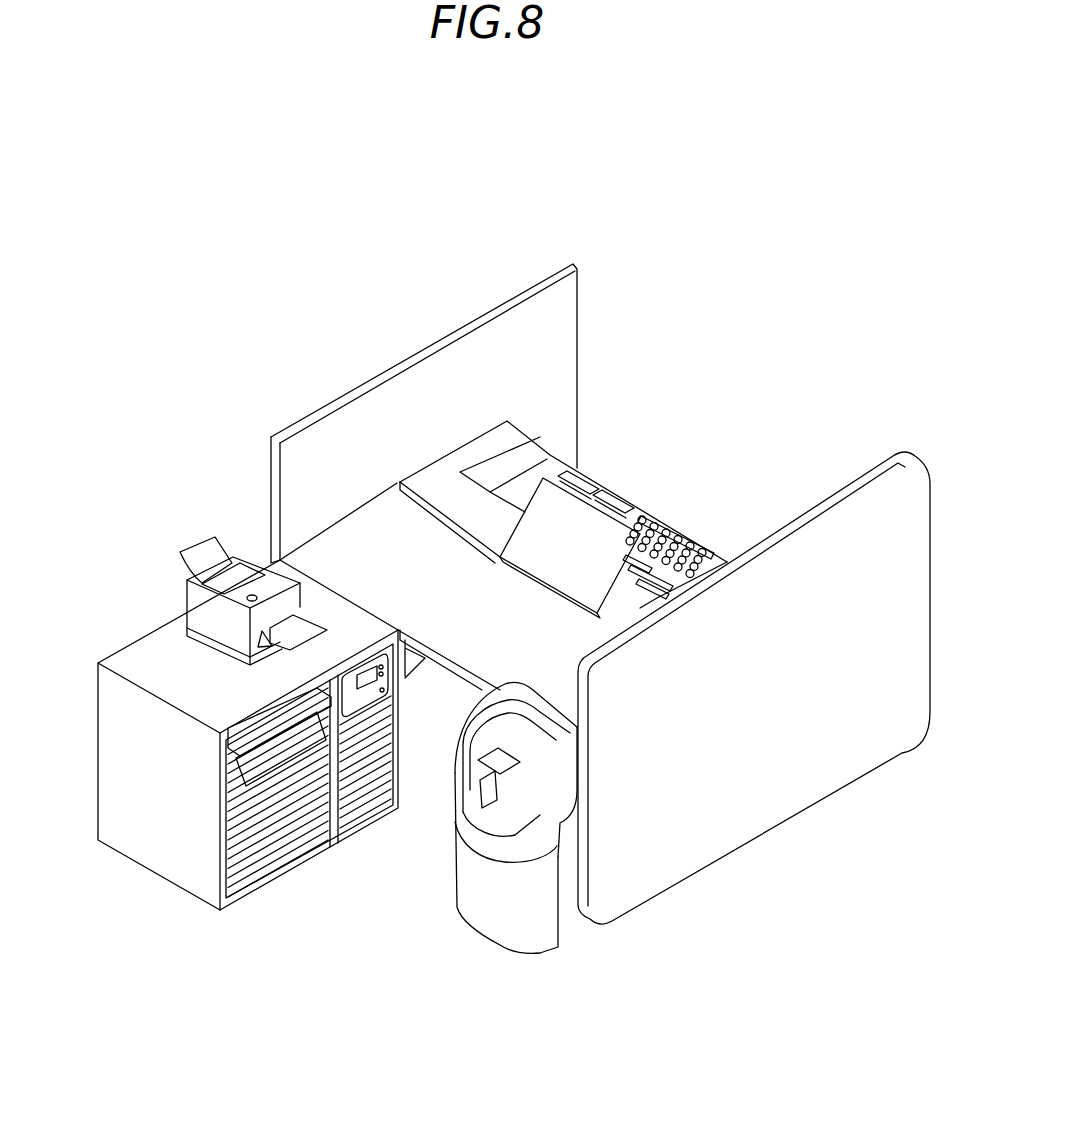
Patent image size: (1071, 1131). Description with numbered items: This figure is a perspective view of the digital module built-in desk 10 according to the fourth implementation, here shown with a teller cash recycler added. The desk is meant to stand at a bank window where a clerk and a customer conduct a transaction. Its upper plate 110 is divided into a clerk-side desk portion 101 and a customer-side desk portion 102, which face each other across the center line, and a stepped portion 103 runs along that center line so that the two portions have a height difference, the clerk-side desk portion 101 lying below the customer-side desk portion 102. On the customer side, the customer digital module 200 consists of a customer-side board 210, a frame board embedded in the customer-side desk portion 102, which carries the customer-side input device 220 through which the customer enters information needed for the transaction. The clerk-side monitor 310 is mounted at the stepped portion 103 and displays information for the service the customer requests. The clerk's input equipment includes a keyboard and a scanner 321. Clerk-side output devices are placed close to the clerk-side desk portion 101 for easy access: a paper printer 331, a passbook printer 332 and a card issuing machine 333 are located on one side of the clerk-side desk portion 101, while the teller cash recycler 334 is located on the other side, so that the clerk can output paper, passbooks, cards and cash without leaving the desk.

The digital module built-in desk 10 is at (523, 213).
The upper plate 110 is at (452, 285).
The clerk-side desk portion 101 is at (347, 547).
The customer-side desk portion 102 is at (490, 437).
The stepped portion 103 is at (397, 480).
The customer digital module 200 is at (740, 365).
The customer-side board 210 is at (532, 453).
The customer-side input device 220 is at (660, 528).
The clerk-side monitor 310 is at (603, 575).
The scanner 321 is at (196, 602).
The paper printer 331 is at (253, 601).
The passbook printer 332 is at (253, 767).
The card issuing machine 333 is at (350, 692).
The teller cash recycler 334 is at (547, 840).